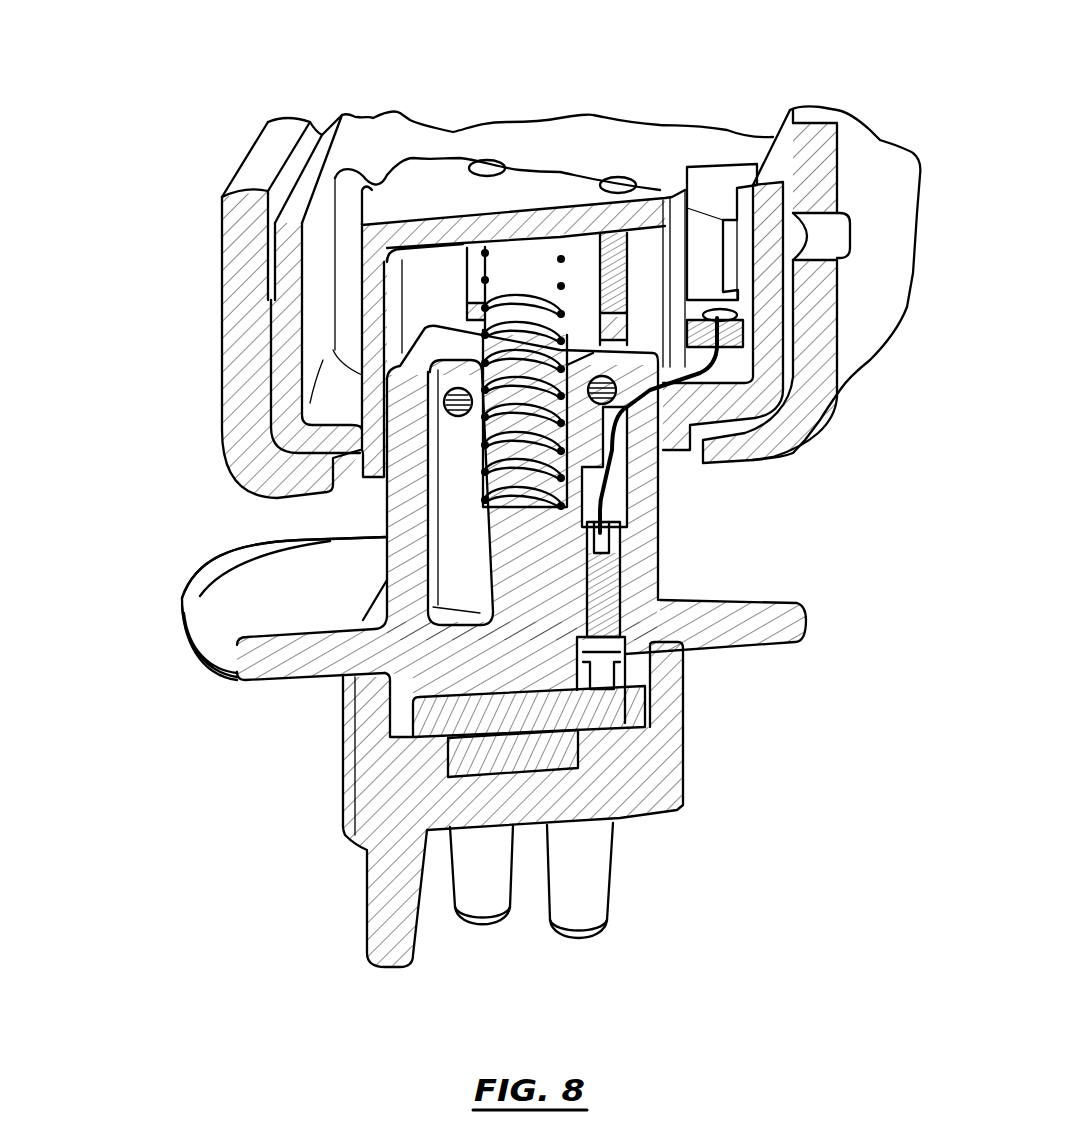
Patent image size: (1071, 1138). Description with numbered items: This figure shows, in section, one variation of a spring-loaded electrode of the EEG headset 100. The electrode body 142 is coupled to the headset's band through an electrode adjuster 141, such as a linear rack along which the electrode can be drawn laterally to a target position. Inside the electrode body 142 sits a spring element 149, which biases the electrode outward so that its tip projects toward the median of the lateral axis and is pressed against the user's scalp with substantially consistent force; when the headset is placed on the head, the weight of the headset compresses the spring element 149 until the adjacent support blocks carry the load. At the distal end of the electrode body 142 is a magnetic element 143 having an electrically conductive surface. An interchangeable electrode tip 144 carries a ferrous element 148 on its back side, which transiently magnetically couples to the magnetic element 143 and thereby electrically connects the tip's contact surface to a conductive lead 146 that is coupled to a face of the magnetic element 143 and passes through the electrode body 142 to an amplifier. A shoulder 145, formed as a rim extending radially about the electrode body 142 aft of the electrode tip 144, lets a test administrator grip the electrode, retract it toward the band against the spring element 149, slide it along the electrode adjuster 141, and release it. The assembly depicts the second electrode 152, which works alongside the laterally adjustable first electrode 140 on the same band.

The EEG headset 100 is at (862, 57).
The electrode adjuster 141 is at (253, 289).
The electrode body 142 is at (408, 195).
The spring element 149 is at (515, 425).
The conductive lead 146 is at (637, 408).
The first electrode 140 is at (240, 590).
The second electrode 152 is at (217, 567).
The shoulder 145 is at (770, 620).
The magnetic element 143 is at (595, 705).
The ferrous element 148 is at (550, 755).
The electrode tip 144 is at (588, 863).